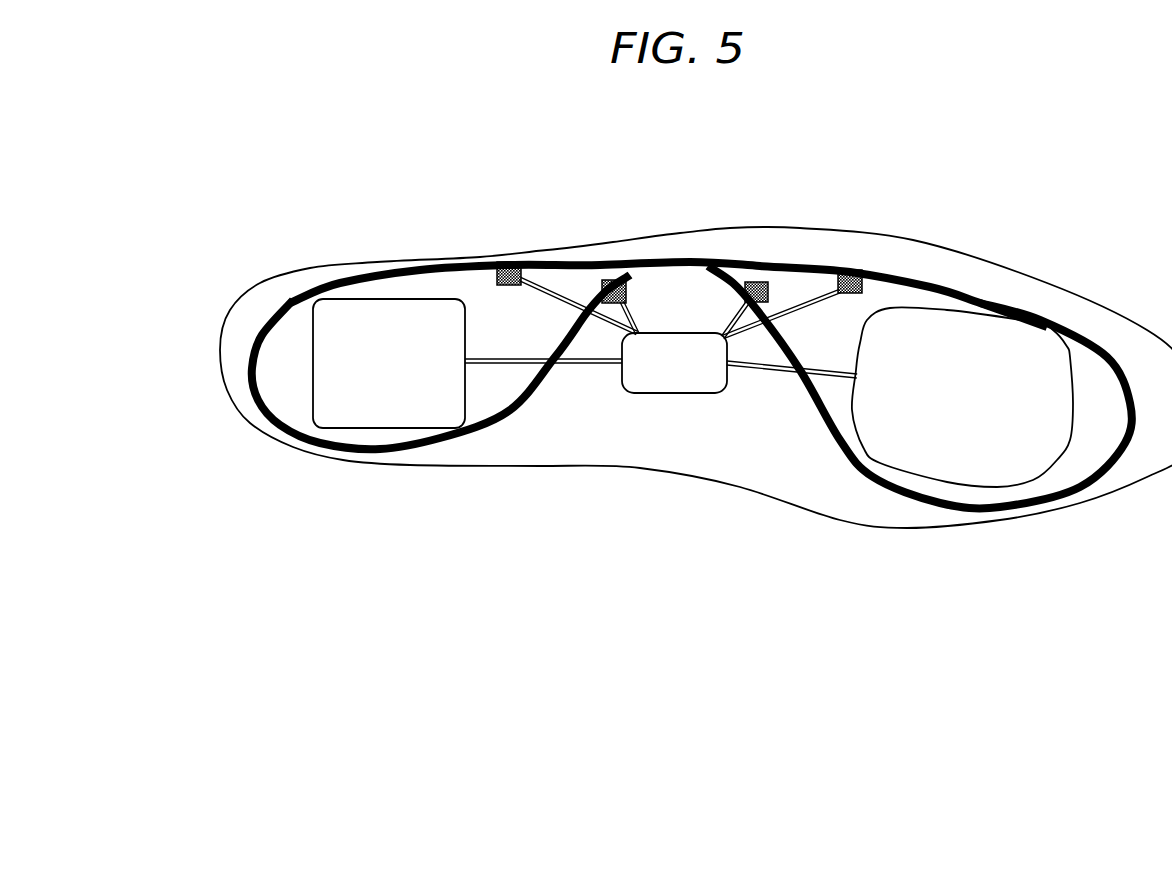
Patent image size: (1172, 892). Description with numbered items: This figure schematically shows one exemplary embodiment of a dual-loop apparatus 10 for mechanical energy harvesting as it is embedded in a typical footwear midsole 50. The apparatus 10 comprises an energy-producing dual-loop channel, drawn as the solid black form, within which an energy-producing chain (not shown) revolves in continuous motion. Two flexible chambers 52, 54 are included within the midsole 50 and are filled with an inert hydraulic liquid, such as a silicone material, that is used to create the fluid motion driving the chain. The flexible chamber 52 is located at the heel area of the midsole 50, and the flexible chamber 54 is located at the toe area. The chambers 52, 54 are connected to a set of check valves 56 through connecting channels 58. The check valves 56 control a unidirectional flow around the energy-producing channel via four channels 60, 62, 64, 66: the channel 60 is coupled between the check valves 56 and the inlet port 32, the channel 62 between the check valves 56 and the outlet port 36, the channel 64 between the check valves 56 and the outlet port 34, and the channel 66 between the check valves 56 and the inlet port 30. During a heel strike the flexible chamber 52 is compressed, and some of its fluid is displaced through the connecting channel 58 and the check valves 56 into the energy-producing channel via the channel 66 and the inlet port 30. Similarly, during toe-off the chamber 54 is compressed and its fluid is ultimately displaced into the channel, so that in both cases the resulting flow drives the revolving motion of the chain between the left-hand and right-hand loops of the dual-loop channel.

The dual-loop apparatus 10 is at (281, 143).
The inlet port 30 is at (862, 270).
The inlet port 32 is at (508, 262).
The outlet port 34 is at (757, 283).
The outlet port 36 is at (610, 280).
The footwear midsole 50 is at (866, 540).
The flexible chamber 52 is at (353, 323).
The flexible chamber 54 is at (1018, 350).
The check valves 56 is at (678, 378).
The connecting channel 58 is at (517, 360).
The channel 60 is at (558, 290).
The channel 62 is at (635, 327).
The channel 64 is at (727, 323).
The channel 66 is at (813, 293).